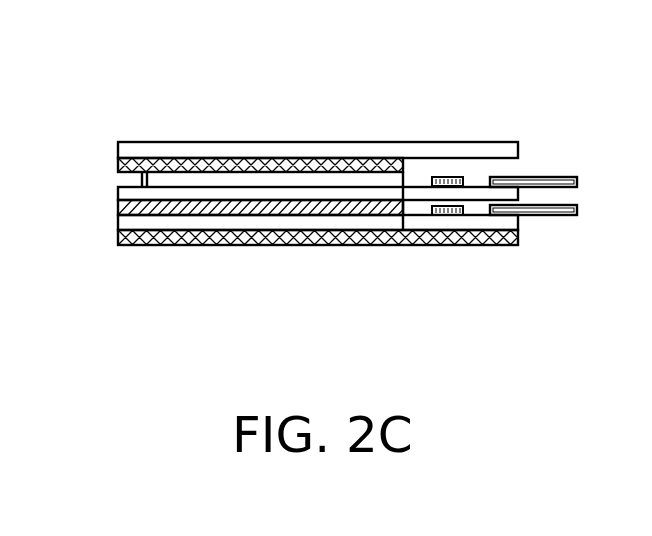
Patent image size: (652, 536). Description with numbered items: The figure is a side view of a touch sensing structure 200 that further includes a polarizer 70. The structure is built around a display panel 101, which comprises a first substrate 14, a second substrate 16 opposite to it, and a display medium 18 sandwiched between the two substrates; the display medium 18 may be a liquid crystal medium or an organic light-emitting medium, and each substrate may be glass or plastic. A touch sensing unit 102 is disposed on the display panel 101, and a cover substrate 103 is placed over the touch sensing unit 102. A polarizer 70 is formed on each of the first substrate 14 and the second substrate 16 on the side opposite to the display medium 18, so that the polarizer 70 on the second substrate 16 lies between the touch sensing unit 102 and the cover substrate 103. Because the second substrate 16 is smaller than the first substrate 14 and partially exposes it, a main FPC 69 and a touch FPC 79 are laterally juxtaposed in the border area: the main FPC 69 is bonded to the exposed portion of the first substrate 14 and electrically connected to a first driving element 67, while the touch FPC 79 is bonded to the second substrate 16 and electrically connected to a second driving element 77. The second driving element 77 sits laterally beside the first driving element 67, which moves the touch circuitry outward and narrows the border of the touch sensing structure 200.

The touch sensing structure 200 is at (518, 85).
The cover substrate 103 is at (218, 150).
The touch sensing unit 102 is at (303, 177).
The polarizer 70 is at (118, 163).
The display panel 101 is at (318, 298).
The second substrate 16 is at (203, 195).
The display medium 18 is at (260, 208).
The first substrate 14 is at (316, 225).
The second driving element 77 is at (443, 177).
The first driving element 67 is at (445, 215).
The touch FPC 79 is at (577, 182).
The main FPC 69 is at (577, 211).